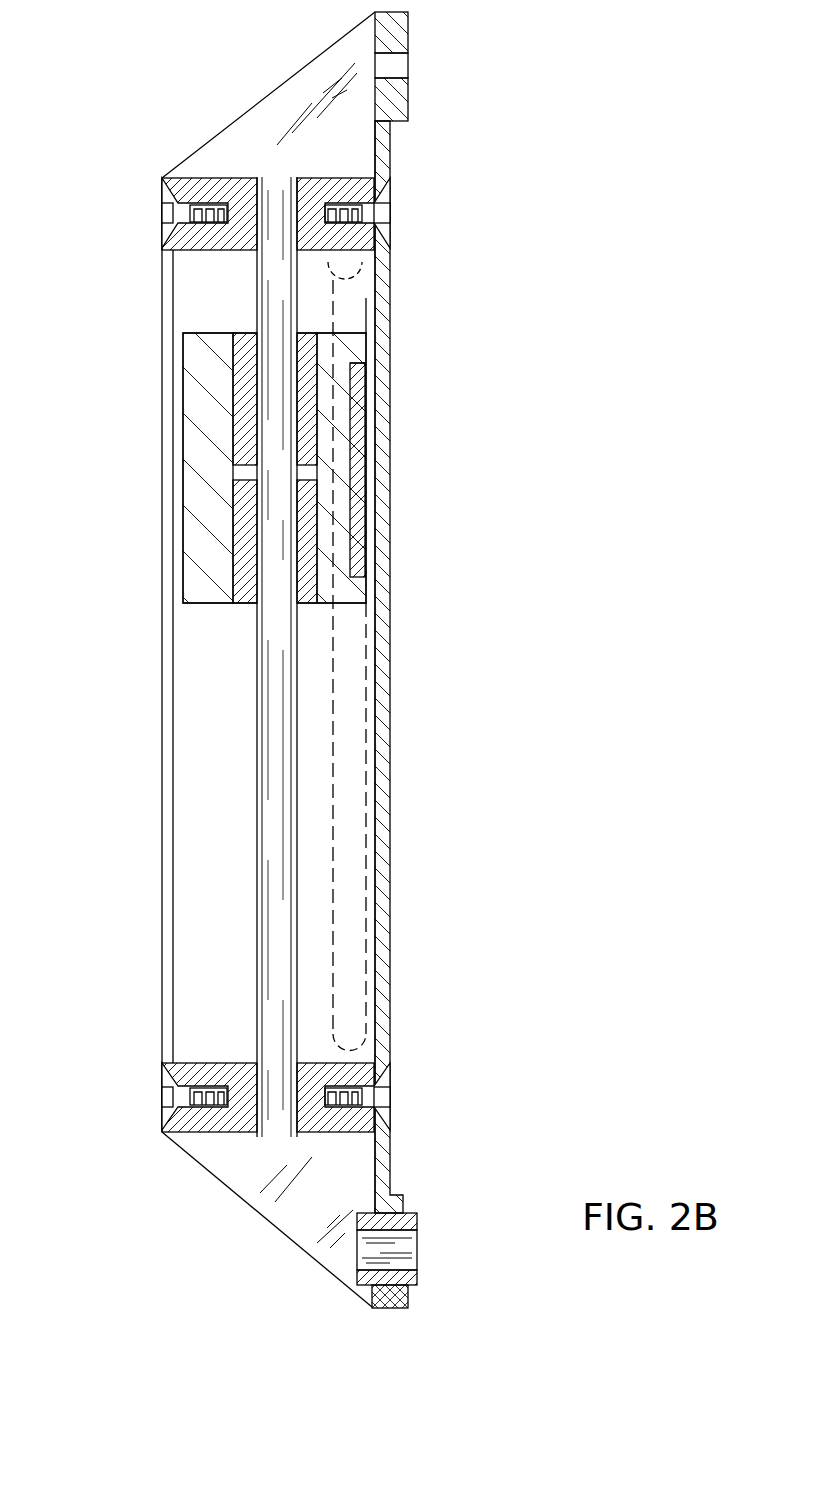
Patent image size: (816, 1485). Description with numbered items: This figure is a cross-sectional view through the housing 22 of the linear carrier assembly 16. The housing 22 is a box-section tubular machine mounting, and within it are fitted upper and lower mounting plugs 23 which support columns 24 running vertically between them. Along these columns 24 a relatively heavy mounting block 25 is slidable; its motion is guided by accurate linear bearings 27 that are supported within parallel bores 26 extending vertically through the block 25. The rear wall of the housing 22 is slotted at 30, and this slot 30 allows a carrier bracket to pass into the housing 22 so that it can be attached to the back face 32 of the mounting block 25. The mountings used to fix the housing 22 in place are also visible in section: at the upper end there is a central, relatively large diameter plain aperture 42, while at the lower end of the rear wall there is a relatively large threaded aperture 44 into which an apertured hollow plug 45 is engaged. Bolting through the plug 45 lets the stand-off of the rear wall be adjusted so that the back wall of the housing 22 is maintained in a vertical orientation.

The linear carrier assembly 16 is at (538, 157).
The housing 22 is at (382, 903).
The mounting plugs 23 is at (350, 276).
The columns 24 is at (283, 730).
The mounting block 25 is at (203, 402).
The bores 26 is at (232, 548).
The linear bearings 27 is at (310, 385).
The slot 30 is at (333, 972).
The back face 32 is at (360, 468).
The plain aperture 42 is at (400, 62).
The threaded aperture 44 is at (372, 1308).
The hollow plug 45 is at (400, 1248).